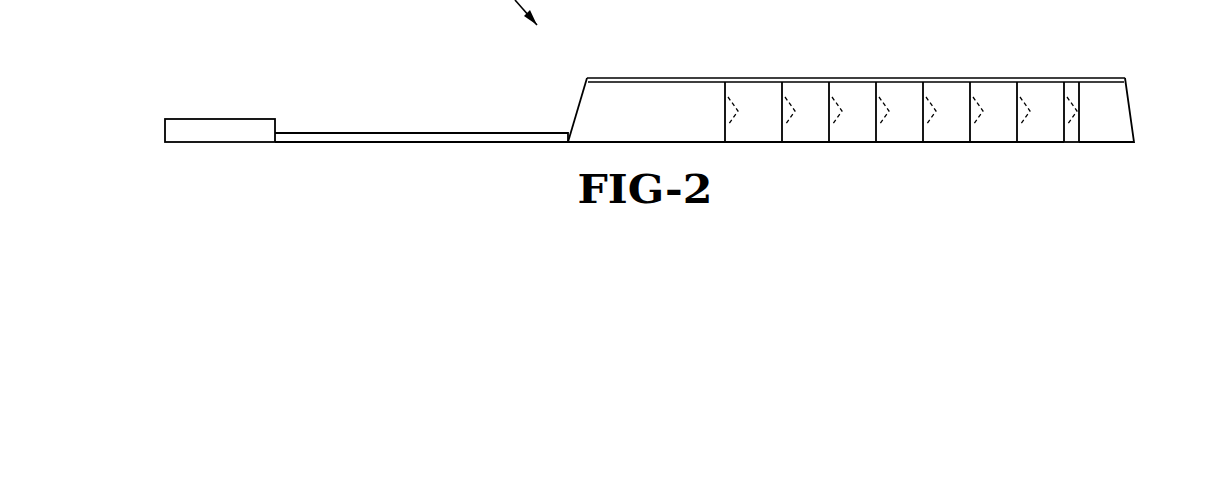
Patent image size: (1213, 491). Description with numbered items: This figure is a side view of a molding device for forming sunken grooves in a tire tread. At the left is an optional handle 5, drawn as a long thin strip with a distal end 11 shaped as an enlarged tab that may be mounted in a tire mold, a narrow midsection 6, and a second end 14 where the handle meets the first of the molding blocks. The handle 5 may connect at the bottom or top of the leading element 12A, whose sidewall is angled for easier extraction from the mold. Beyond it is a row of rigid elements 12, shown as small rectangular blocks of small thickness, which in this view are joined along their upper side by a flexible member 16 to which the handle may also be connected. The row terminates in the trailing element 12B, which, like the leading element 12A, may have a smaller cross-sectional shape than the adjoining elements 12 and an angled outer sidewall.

The distal end 11 is at (203, 128).
The handle 5 is at (355, 133).
The midsection 6 is at (395, 138).
The second end 14 is at (567, 137).
The leading element 12A is at (650, 97).
The flexible member 16 is at (838, 80).
The trailing element 12B is at (1113, 119).
The rigid element 12 is at (750, 127).